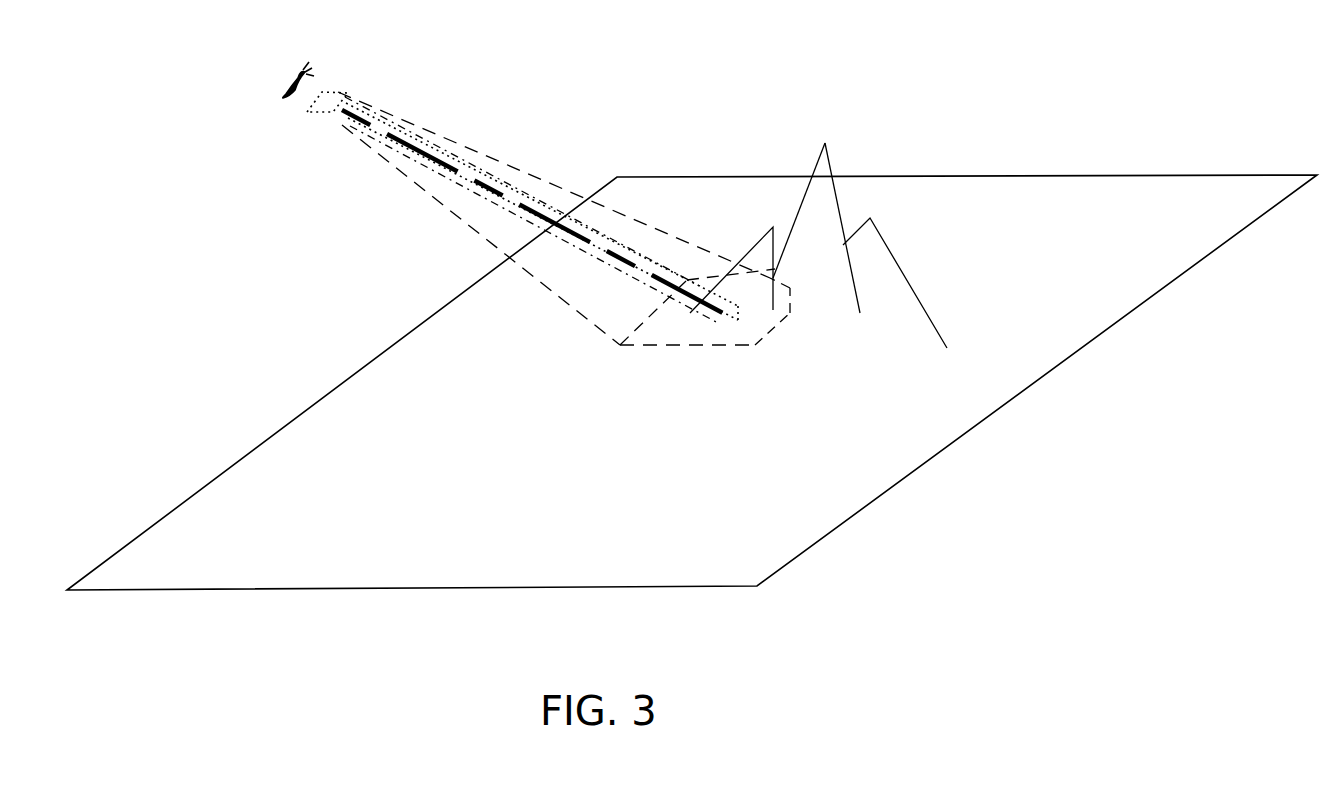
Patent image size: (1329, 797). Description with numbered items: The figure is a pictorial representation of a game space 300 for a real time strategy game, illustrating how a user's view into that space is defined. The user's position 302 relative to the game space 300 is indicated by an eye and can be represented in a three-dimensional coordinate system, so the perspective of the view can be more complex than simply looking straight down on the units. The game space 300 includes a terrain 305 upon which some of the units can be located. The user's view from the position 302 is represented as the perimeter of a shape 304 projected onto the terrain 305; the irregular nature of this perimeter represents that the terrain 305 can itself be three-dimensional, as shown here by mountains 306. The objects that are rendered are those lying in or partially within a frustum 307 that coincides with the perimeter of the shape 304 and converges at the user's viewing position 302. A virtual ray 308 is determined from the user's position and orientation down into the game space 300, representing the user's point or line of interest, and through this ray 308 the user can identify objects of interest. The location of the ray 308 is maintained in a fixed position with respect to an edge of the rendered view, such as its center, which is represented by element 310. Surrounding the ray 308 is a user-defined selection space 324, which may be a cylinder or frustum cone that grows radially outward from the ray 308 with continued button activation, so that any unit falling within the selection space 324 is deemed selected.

The game space 300 is at (428, 588).
The user's position 302 is at (352, 68).
The shape 304 is at (757, 350).
The terrain 305 is at (1005, 248).
The mountains 306 is at (848, 155).
The frustum 307 is at (498, 114).
The ray 308 is at (487, 188).
The element 310 is at (326, 100).
The selection space 324 is at (873, 328).